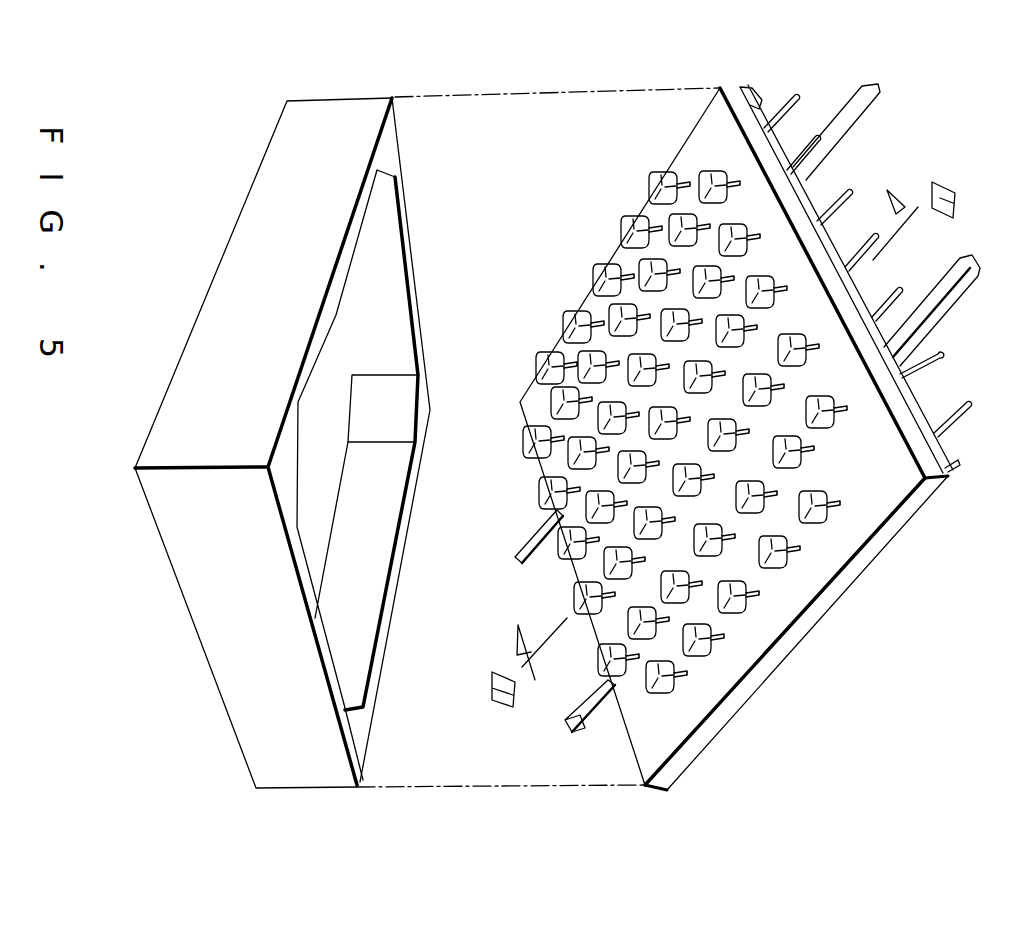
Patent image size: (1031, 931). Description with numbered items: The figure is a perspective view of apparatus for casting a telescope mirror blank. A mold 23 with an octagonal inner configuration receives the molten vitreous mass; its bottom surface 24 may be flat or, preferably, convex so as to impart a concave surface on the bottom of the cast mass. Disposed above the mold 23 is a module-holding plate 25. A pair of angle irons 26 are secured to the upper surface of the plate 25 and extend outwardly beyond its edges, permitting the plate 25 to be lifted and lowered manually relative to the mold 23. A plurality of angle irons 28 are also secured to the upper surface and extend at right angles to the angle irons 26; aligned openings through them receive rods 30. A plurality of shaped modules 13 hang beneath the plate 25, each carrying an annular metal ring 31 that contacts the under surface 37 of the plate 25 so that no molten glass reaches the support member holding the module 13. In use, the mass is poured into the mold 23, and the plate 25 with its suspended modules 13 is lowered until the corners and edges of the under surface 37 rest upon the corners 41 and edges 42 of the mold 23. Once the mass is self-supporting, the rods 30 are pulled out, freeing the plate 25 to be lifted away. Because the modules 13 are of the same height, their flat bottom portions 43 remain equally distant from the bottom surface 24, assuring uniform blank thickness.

The shaped module 13 is at (625, 222).
The mold 23 is at (205, 605).
The bottom surface 24 is at (299, 415).
The module-holding plate 25 is at (841, 587).
The angle irons 26 is at (847, 110).
The angle irons 28 is at (837, 243).
The rods 30 is at (965, 405).
The annular metal ring 31 is at (848, 413).
The under surface 37 is at (708, 138).
The corners 41 is at (394, 135).
The edges 42 is at (335, 282).
The flat bottom portions 43 is at (570, 320).